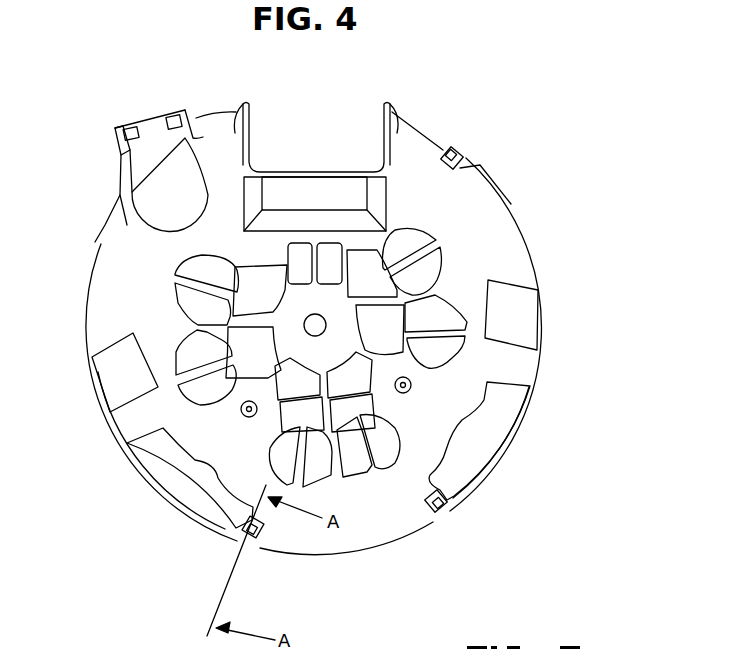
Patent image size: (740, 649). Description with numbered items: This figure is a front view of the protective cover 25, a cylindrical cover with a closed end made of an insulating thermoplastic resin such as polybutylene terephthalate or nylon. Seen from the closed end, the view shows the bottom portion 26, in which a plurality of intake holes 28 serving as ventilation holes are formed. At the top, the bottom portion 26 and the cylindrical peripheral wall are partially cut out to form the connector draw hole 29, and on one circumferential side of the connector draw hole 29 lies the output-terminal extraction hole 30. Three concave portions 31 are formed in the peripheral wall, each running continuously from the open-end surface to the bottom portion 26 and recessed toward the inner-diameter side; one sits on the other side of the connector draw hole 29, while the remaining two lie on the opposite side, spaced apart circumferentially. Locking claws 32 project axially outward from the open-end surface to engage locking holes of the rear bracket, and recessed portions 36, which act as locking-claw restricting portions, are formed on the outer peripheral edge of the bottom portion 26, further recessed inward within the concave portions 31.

The protective cover 25 is at (104, 66).
The bottom portion 26 is at (140, 265).
The intake holes 28 is at (422, 273).
The connector draw hole 29 is at (345, 148).
The output-terminal extraction hole 30 is at (145, 158).
The concave portions 31 is at (465, 162).
The locking claws 32 is at (455, 153).
The recessed portions 36 is at (513, 207).